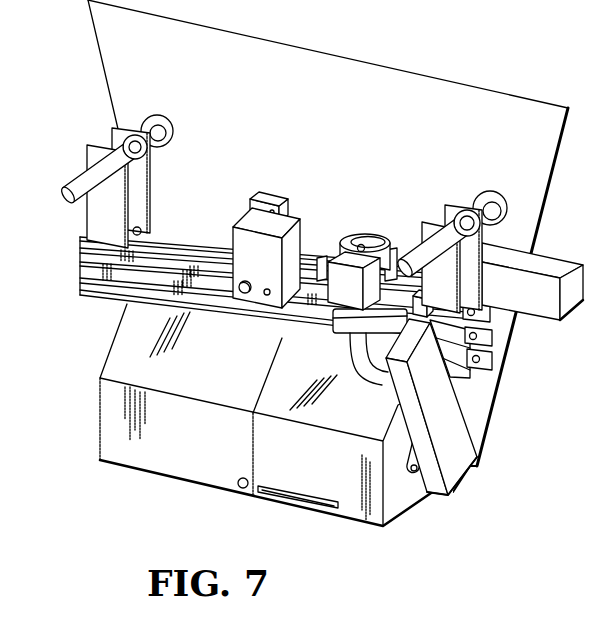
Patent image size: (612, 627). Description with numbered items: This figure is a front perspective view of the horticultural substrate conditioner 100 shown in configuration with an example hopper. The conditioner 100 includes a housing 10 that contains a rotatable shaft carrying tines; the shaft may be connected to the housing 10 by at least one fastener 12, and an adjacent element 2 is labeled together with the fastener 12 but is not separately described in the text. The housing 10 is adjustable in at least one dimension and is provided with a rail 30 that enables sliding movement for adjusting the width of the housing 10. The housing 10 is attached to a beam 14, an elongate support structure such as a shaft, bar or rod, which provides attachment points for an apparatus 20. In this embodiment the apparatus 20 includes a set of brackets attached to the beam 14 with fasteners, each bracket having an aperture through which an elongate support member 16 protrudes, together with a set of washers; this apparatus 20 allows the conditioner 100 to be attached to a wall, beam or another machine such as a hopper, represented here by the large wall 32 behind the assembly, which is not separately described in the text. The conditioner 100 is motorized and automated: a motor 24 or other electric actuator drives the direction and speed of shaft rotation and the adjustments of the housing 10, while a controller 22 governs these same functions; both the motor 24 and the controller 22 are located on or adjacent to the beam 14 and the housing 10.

The connector fitting 2 is at (472, 370).
The housing 10 is at (97, 408).
The fastener 12 is at (499, 407).
The beam 14 is at (98, 299).
The elongate support member 16 is at (64, 186).
The apparatus 20 is at (87, 153).
The controller 22 is at (238, 220).
The motor 24 is at (360, 234).
The rail 30 is at (270, 497).
The back plate 32 is at (496, 93).
The horticultural substrate conditioner 100 is at (456, 512).